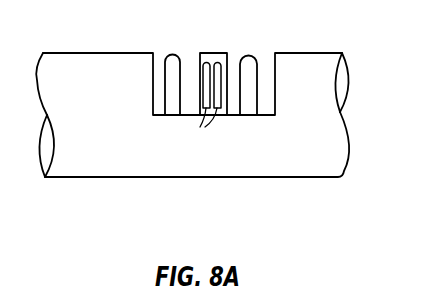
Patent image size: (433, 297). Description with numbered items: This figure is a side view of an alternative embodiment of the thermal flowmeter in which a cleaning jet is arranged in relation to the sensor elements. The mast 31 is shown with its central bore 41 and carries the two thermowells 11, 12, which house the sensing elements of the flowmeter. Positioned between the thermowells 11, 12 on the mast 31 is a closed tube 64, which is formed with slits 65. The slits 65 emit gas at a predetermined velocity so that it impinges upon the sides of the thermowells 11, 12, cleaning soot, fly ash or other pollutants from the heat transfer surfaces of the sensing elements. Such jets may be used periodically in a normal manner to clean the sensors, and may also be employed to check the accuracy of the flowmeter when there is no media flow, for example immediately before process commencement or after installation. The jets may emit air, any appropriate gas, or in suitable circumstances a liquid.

The thermowell 11 is at (250, 56).
The thermowell 12 is at (174, 54).
The mast 31 is at (313, 53).
The central bore 41 is at (338, 85).
The closed tube 64 is at (218, 52).
The slits 65 is at (203, 126).